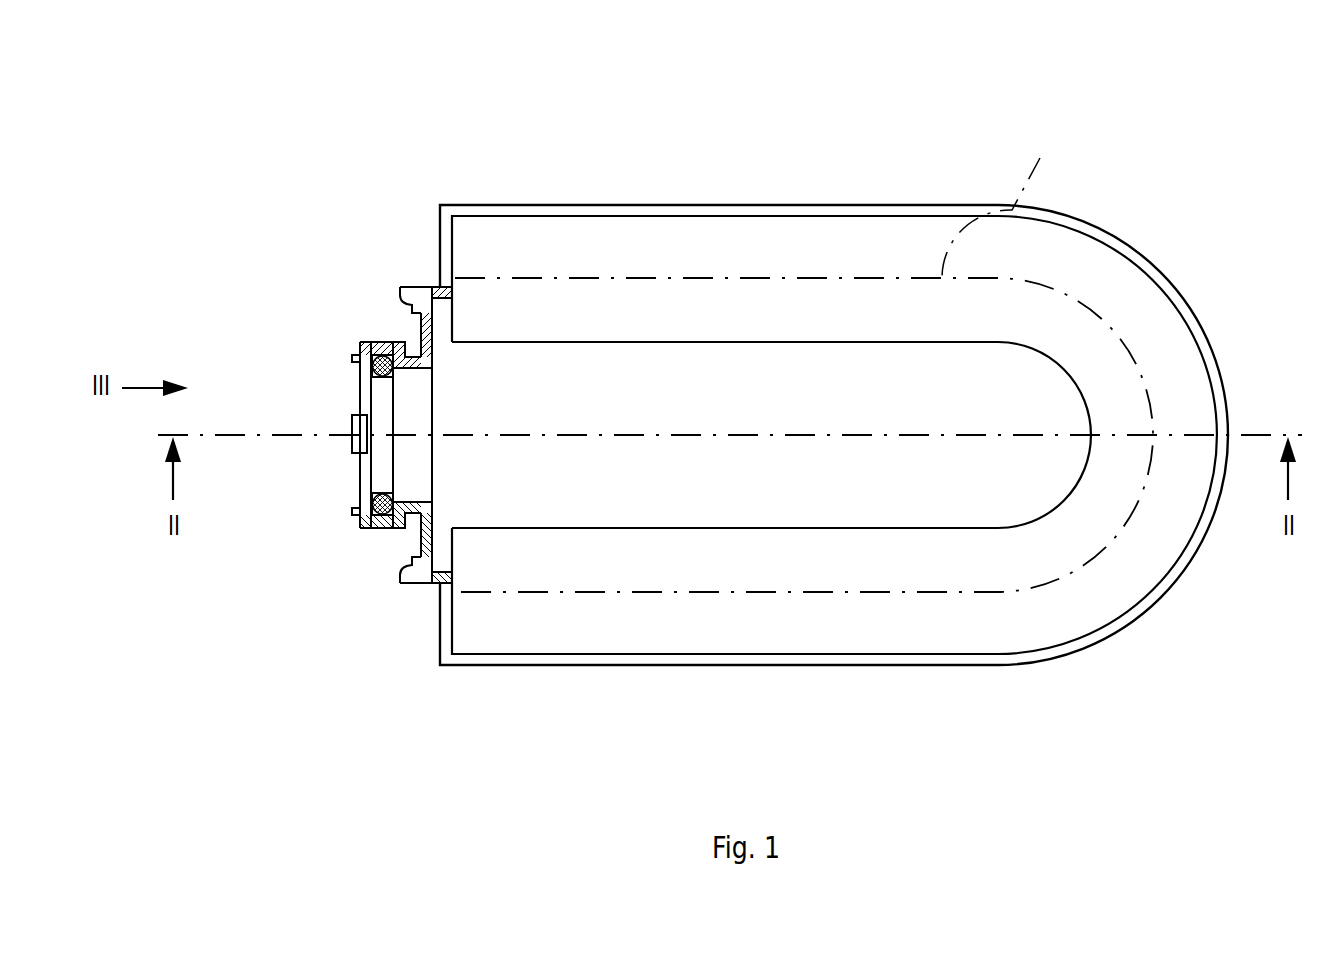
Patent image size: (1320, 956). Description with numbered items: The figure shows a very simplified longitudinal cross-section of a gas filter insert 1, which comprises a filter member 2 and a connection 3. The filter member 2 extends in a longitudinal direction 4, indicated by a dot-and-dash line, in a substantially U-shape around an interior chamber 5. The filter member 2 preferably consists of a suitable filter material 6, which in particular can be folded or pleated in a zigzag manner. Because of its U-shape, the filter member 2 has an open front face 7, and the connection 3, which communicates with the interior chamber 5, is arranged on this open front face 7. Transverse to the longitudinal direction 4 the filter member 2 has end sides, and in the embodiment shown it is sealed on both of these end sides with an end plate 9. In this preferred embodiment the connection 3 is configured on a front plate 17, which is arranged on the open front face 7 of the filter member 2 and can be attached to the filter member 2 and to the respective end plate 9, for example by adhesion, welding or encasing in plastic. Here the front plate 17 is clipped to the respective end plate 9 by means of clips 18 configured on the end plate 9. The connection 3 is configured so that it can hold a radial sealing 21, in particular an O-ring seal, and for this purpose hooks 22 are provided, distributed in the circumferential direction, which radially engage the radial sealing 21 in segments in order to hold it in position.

The gas filter insert 1 is at (1190, 233).
The filter member 2 is at (748, 320).
The connection 3 is at (373, 334).
The longitudinal direction 4 is at (997, 199).
The interior chamber 5 is at (808, 500).
The filter material 6 is at (621, 242).
The open front face 7 is at (460, 463).
The end plate 9 is at (800, 216).
The front plate 17 is at (425, 542).
The clips 18 is at (407, 287).
The radial sealing 21 is at (372, 380).
The hooks 22 is at (352, 357).